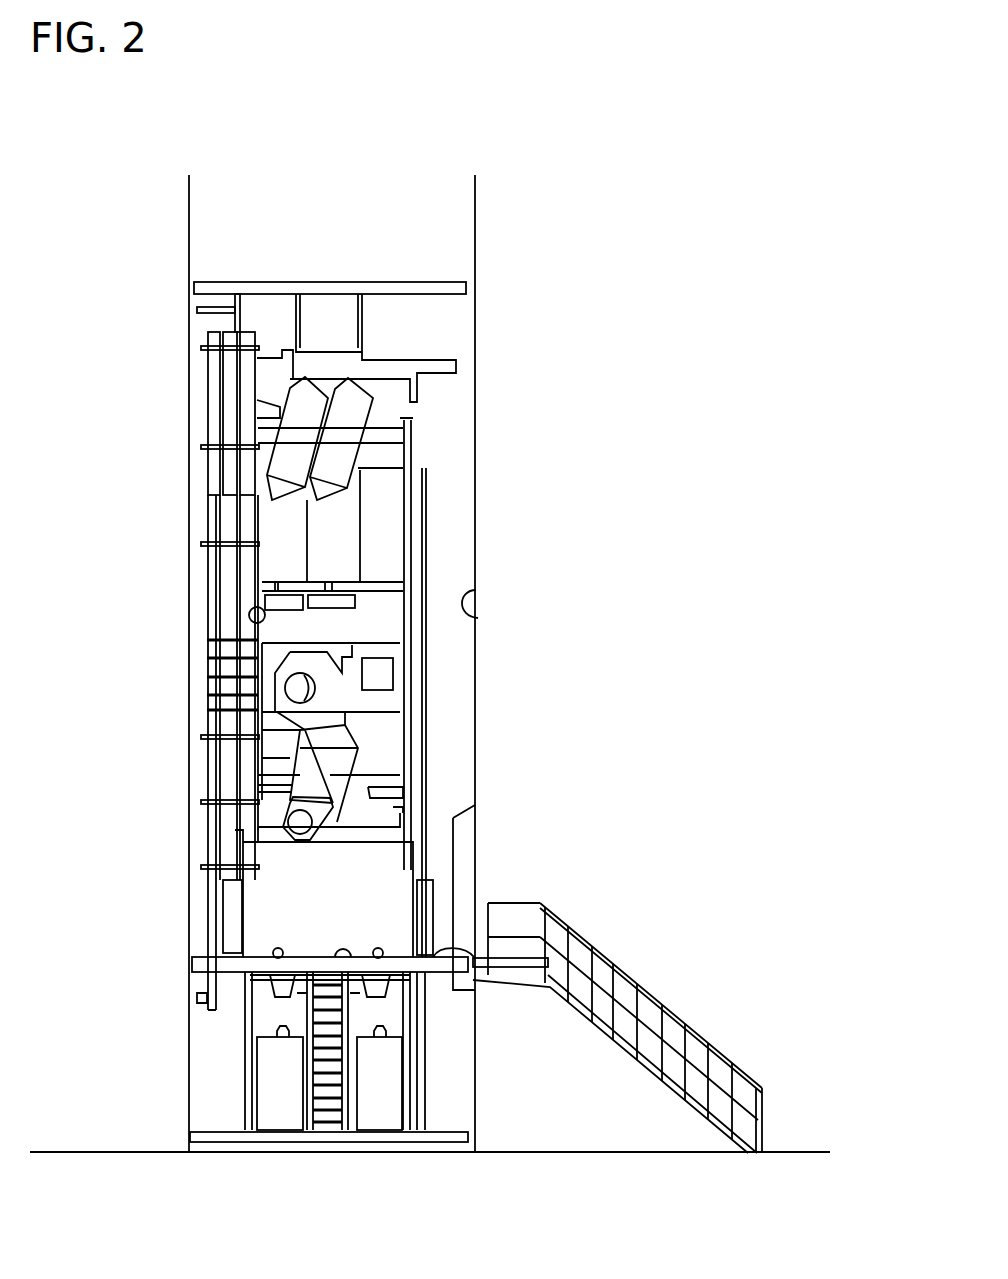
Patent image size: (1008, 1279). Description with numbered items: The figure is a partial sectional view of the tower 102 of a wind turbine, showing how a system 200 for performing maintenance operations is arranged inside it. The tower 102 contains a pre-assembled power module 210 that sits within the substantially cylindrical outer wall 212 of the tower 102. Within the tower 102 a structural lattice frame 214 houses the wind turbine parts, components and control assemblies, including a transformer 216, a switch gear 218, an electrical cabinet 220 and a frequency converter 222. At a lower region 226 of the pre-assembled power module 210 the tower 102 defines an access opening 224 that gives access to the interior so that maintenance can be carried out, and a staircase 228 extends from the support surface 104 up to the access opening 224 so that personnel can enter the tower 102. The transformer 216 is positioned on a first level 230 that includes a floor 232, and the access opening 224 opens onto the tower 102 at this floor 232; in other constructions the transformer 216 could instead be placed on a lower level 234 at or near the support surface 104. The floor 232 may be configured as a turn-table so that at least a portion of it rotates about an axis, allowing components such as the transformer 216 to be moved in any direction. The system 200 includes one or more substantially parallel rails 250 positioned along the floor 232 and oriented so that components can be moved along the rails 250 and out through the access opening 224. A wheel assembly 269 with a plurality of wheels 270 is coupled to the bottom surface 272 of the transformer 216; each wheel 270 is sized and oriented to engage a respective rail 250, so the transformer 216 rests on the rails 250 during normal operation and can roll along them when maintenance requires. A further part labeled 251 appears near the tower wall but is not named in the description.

The tower 102 is at (475, 246).
The support surface 104 is at (60, 1152).
The system 200 is at (184, 937).
The pre-assembled power module 210 is at (201, 521).
The outer wall 212 is at (189, 372).
The structural lattice frame 214 is at (257, 607).
The transformer 216 is at (243, 852).
The switch gear 218 is at (290, 652).
The electrical cabinet 220 is at (402, 539).
The frequency converter 222 is at (367, 758).
The access opening 224 is at (475, 805).
The lower region 226 is at (617, 992).
The staircase 228 is at (625, 1050).
The first level 230 is at (189, 963).
The floor 232 is at (452, 956).
The lower level 234 is at (221, 1130).
The rail 250 is at (582, 963).
The wall coupling 251 is at (478, 618).
The wheel assembly 269 is at (287, 965).
The wheel 270 is at (283, 950).
The bottom surface 272 is at (350, 952).